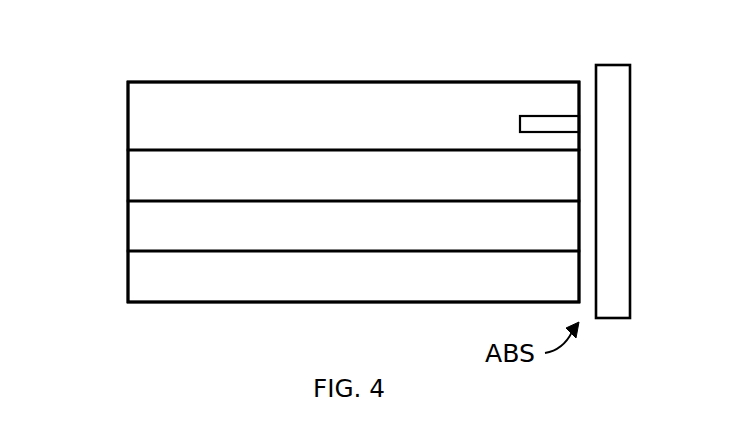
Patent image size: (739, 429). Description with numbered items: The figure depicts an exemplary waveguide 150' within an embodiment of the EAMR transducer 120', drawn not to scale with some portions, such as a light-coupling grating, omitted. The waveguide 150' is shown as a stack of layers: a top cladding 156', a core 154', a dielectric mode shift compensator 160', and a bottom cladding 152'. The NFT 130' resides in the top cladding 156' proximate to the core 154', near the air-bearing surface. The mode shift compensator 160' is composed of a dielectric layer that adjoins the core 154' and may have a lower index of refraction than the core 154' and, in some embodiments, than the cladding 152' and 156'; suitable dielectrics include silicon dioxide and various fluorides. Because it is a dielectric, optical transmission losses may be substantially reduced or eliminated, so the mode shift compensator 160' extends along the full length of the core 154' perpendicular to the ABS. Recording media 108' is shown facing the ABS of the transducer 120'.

The EAMR transducer 120' is at (353, 159).
The waveguide 150' is at (295, 192).
The top cladding 156' is at (327, 101).
The core 154' is at (327, 160).
The mode shift compensator 160' is at (322, 220).
The bottom cladding 152' is at (353, 299).
The NFT 130' is at (517, 92).
The recording media 108' is at (638, 191).